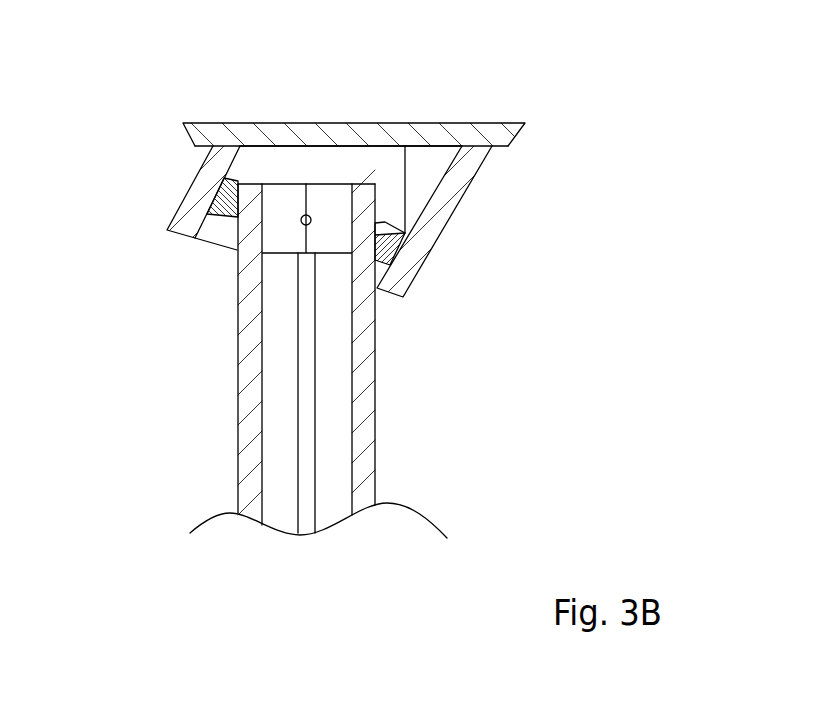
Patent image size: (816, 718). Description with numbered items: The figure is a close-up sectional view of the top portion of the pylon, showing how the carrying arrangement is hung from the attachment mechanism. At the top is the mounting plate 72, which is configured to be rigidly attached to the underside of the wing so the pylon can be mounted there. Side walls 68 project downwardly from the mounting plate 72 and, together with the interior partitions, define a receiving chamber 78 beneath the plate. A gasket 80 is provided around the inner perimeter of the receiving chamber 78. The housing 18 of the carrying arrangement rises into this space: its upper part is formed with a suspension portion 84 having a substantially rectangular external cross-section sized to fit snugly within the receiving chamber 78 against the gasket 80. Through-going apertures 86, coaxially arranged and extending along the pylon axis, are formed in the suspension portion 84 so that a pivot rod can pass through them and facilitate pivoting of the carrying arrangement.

The housing 18 is at (377, 430).
The side wall 68 is at (180, 210).
The mounting plate 72 is at (397, 145).
The receiving chamber 78 is at (310, 167).
The gasket 80 is at (197, 237).
The suspension portion 84 is at (280, 242).
The through-going aperture 86 is at (300, 220).